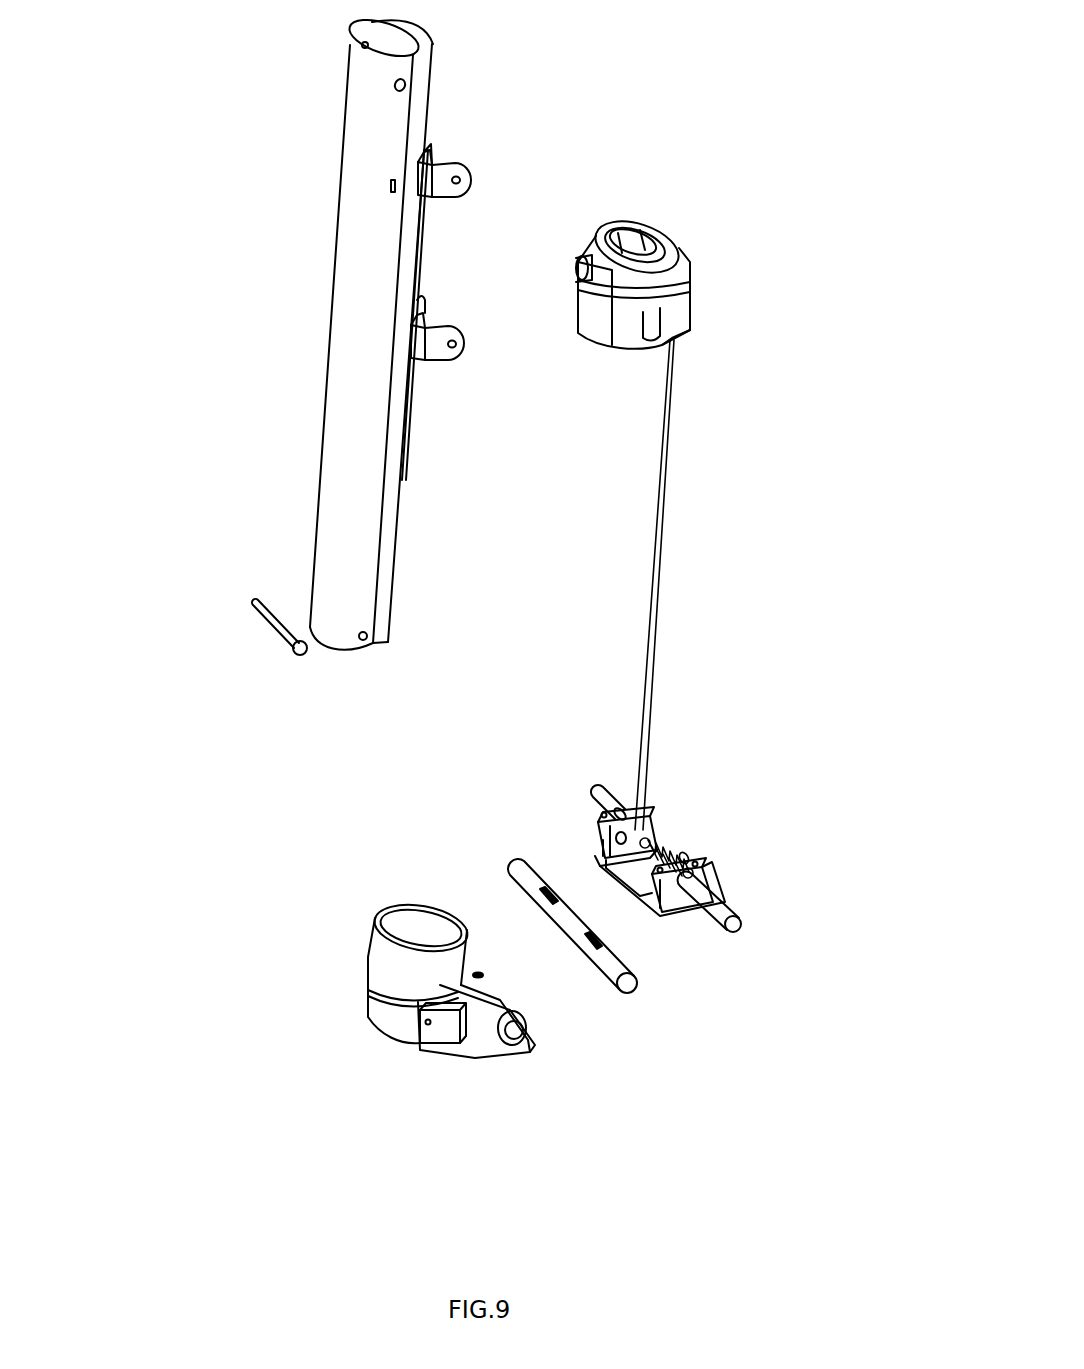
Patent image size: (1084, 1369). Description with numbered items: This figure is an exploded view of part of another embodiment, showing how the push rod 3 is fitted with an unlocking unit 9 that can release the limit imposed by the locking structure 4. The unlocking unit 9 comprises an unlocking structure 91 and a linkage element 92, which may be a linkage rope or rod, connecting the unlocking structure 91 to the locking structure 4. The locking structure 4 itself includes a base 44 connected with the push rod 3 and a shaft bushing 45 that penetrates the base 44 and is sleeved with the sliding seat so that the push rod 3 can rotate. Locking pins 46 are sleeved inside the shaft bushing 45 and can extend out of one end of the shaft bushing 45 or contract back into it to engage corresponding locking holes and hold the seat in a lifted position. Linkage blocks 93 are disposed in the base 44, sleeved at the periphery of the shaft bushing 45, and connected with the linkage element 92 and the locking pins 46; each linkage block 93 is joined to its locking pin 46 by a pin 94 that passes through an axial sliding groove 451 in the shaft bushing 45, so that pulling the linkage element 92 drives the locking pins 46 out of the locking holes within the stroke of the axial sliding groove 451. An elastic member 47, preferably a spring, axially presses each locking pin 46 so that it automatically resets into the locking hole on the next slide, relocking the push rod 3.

The push rod 3 is at (362, 298).
The locking structure 4 is at (757, 955).
The unlocking unit 9 is at (683, 830).
The base 44 is at (395, 987).
The shaft bushing 45 is at (527, 880).
The axial sliding groove 451 is at (540, 894).
The locking pin 46 is at (610, 803).
The elastic member 47 is at (685, 856).
The unlocking structure 91 is at (648, 217).
The linkage element 92 is at (652, 567).
The linkage block 93 is at (608, 818).
The pin 94 is at (687, 868).